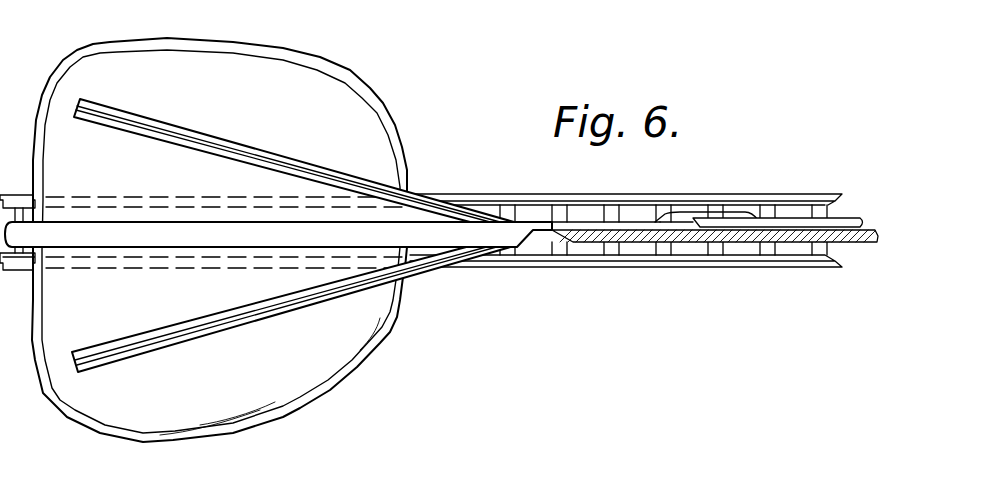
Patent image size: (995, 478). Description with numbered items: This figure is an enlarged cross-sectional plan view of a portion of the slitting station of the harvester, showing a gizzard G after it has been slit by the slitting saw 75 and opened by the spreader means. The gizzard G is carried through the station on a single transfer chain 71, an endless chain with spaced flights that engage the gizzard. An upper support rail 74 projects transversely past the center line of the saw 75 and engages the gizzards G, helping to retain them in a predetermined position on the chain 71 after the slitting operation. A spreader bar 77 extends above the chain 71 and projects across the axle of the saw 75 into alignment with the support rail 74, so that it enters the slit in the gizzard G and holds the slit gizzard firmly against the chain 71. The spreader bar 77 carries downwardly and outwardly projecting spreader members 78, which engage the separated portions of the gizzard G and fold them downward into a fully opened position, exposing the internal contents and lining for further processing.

The gizzard G is at (203, 66).
The single transfer chain 71 is at (613, 257).
The upper support rail 74 is at (785, 222).
The slitting saw 75 is at (732, 235).
The spreader bar 77 is at (378, 232).
The spreader members 78 is at (228, 151).